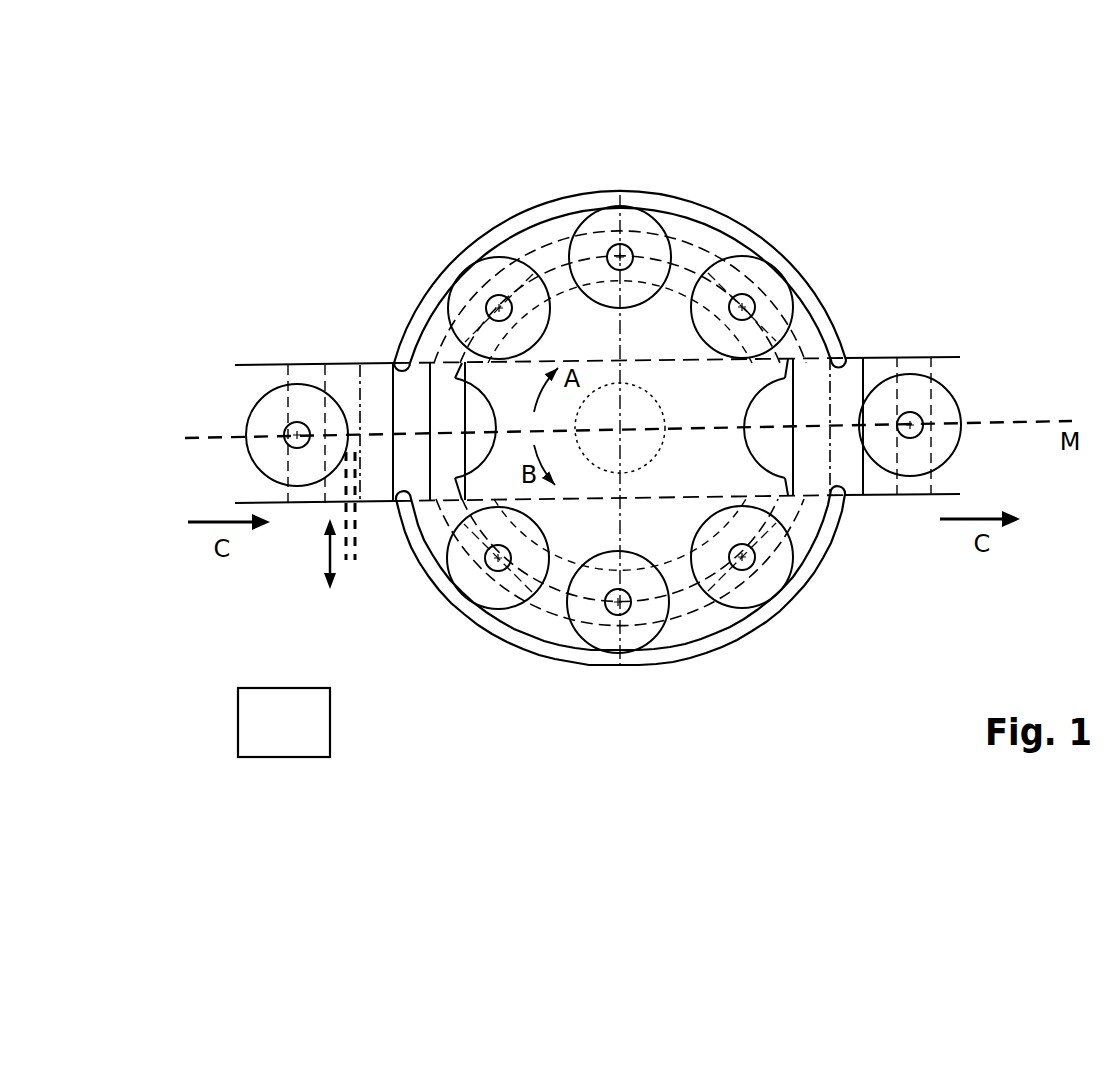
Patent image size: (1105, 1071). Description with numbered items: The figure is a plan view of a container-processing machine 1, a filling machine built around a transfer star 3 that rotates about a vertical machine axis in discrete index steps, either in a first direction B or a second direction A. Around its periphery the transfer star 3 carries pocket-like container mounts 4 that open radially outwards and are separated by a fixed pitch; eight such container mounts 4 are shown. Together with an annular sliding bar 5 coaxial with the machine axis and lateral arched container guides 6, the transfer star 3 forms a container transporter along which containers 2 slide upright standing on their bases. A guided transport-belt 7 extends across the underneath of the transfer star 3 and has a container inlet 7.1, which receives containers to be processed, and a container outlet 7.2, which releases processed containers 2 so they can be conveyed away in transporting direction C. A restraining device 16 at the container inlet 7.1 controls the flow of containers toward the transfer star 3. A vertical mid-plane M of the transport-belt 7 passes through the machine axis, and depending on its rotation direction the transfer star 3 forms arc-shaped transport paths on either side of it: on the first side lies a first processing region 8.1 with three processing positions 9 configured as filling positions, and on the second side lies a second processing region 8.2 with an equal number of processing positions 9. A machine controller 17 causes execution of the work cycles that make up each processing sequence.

The container-processing machine 1 is at (960, 178).
The container 2 is at (502, 278).
The transfer star 3 is at (685, 406).
The container mount 4 is at (468, 410).
The sliding bar 5 is at (692, 603).
The container guide 6 is at (652, 422).
The transport-belt 7 is at (292, 508).
The container inlet 7.1 is at (380, 422).
The container outlet 7.2 is at (840, 394).
The first processing region 8.1 is at (668, 682).
The second processing region 8.2 is at (664, 155).
The processing position 9 is at (591, 193).
The restraining device 16 is at (357, 545).
The machine controller 17 is at (310, 735).